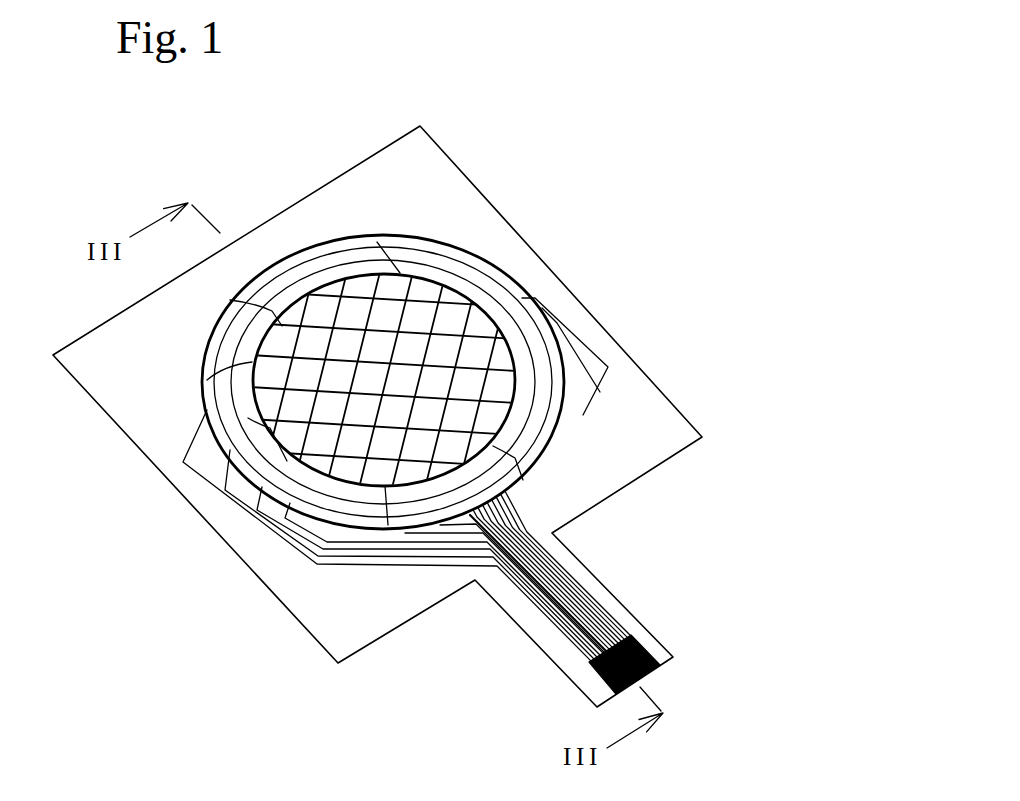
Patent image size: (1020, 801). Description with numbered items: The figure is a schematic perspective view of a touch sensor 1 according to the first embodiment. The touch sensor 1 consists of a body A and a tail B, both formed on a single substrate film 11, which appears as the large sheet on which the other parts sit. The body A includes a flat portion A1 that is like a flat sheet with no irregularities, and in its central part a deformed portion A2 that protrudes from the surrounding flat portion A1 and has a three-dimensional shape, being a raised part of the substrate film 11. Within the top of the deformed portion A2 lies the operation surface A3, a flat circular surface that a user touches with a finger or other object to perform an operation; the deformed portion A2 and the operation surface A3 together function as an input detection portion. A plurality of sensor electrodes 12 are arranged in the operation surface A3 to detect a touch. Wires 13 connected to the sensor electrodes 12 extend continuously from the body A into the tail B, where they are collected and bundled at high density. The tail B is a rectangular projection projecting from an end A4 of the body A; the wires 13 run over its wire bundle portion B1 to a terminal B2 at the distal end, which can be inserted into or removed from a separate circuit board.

The touch sensor 1 is at (494, 160).
The substrate film 11 is at (143, 458).
The sensor electrodes 12 is at (370, 283).
The wires 13 is at (546, 627).
The body A is at (811, 362).
The flat portion A1 is at (622, 426).
The deformed portion A2 is at (484, 268).
The operation surface A3 is at (480, 348).
The end of the body A4 is at (672, 468).
The tail B is at (616, 593).
The wire bundle portion B1 is at (604, 588).
The terminal B2 is at (660, 639).